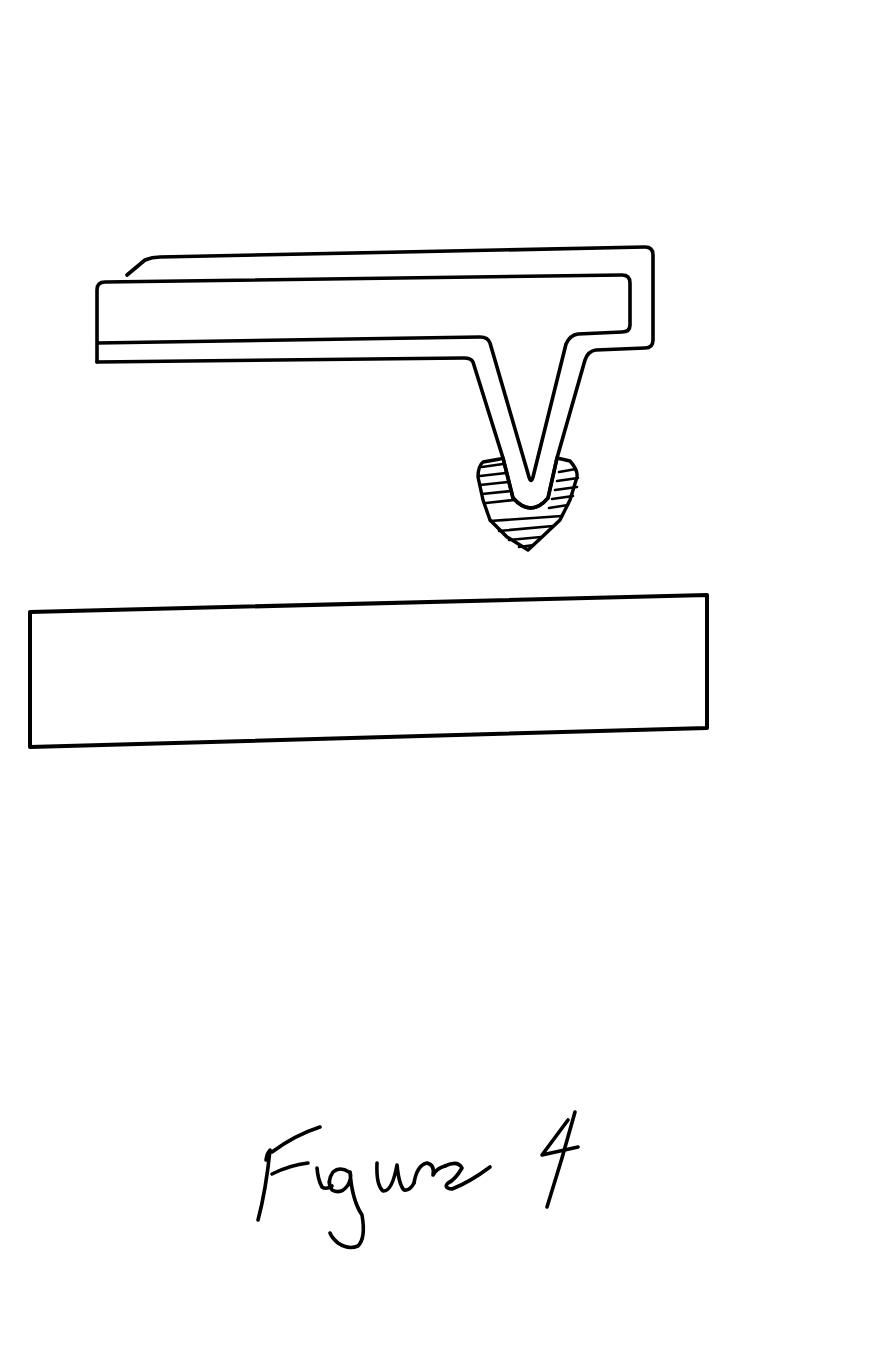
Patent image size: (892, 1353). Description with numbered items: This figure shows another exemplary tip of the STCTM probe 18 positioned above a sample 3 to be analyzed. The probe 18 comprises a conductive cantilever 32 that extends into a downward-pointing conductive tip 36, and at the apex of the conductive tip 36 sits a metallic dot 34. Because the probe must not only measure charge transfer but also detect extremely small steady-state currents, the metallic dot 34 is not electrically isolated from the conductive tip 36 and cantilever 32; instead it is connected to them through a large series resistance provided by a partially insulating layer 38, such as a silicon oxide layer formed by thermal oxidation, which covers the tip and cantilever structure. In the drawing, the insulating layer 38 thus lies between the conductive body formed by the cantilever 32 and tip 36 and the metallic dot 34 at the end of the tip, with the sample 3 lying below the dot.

The sample 3 is at (368, 671).
The probe 18 is at (467, 275).
The conductive cantilever 32 is at (375, 292).
The metallic dot 34 is at (591, 495).
The conductive tip 36 is at (527, 403).
The partially insulating layer 38 is at (474, 374).